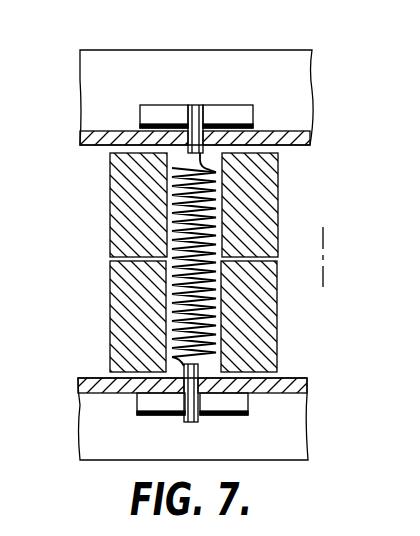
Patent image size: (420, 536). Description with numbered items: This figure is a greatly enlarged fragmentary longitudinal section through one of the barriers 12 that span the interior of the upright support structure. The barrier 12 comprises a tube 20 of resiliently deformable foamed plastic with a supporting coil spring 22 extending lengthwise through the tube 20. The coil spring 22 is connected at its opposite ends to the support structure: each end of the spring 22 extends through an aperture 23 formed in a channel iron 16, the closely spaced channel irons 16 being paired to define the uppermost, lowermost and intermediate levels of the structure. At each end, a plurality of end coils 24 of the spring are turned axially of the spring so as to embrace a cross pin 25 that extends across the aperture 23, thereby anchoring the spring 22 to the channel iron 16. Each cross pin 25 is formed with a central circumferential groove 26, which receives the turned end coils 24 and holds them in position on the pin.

The barrier 12 is at (219, 262).
The channel iron 16 is at (274, 60).
The tube 20 is at (278, 170).
The coil spring 22 is at (217, 330).
The aperture 23 is at (173, 127).
The end coils 24 is at (197, 104).
The cross pin 25 is at (233, 113).
The central circumferential groove 26 is at (203, 110).